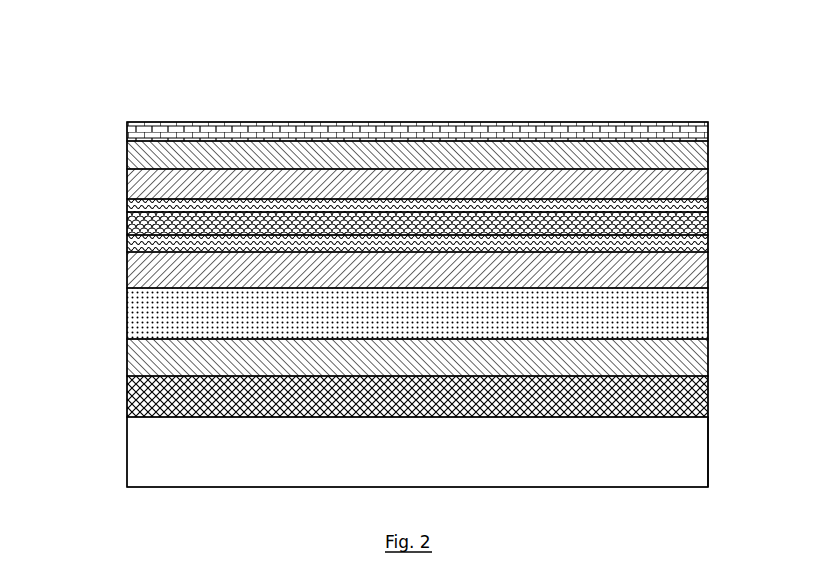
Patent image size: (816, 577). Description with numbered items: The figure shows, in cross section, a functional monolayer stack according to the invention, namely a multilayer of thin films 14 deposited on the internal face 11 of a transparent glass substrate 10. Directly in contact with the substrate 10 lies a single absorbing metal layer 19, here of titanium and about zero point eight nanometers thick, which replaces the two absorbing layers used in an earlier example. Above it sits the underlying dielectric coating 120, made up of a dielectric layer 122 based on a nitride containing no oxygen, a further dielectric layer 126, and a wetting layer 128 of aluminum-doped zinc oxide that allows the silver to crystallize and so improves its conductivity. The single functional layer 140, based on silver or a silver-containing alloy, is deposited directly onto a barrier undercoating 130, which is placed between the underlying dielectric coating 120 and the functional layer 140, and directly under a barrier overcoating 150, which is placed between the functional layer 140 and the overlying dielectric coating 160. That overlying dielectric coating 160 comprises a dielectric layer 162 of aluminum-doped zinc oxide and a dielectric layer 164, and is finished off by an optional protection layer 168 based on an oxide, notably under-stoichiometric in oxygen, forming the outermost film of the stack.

The multilayer of thin films 14 is at (162, 102).
The substrate 10 is at (428, 448).
The internal face 11 is at (672, 420).
The absorbing metal layer 19 is at (145, 397).
The underlying dielectric coating 120 is at (718, 255).
The dielectric layer 122 is at (145, 360).
The dielectric layer 126 is at (145, 312).
The wetting layer 128 is at (145, 277).
The barrier undercoating 130 is at (145, 245).
The functional layer 140 is at (690, 225).
The barrier overcoating 150 is at (147, 217).
The overlying dielectric coating 160 is at (718, 123).
The dielectric layer 162 is at (145, 181).
The dielectric layer 164 is at (145, 153).
The protection layer 168 is at (145, 134).